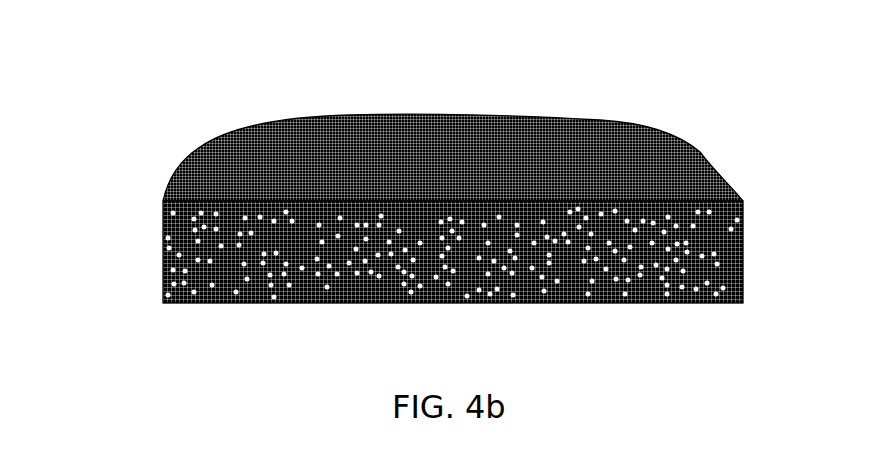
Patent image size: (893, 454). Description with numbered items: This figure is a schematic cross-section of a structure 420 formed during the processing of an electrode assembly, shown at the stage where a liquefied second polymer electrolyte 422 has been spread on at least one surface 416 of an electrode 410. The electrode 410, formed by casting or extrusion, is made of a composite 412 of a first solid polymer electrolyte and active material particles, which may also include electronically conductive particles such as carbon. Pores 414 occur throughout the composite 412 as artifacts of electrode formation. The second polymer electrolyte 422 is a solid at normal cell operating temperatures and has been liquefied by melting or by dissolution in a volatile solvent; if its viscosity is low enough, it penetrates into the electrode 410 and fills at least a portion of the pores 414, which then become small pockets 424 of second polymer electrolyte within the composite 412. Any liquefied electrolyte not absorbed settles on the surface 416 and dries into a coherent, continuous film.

The electrode 410 is at (446, 231).
The composite 412 is at (456, 272).
The pores 414 is at (170, 258).
The surface 416 is at (668, 197).
The structure 420 is at (481, 127).
The liquefied second polymer electrolyte 422 is at (532, 150).
The small pockets 424 is at (163, 203).